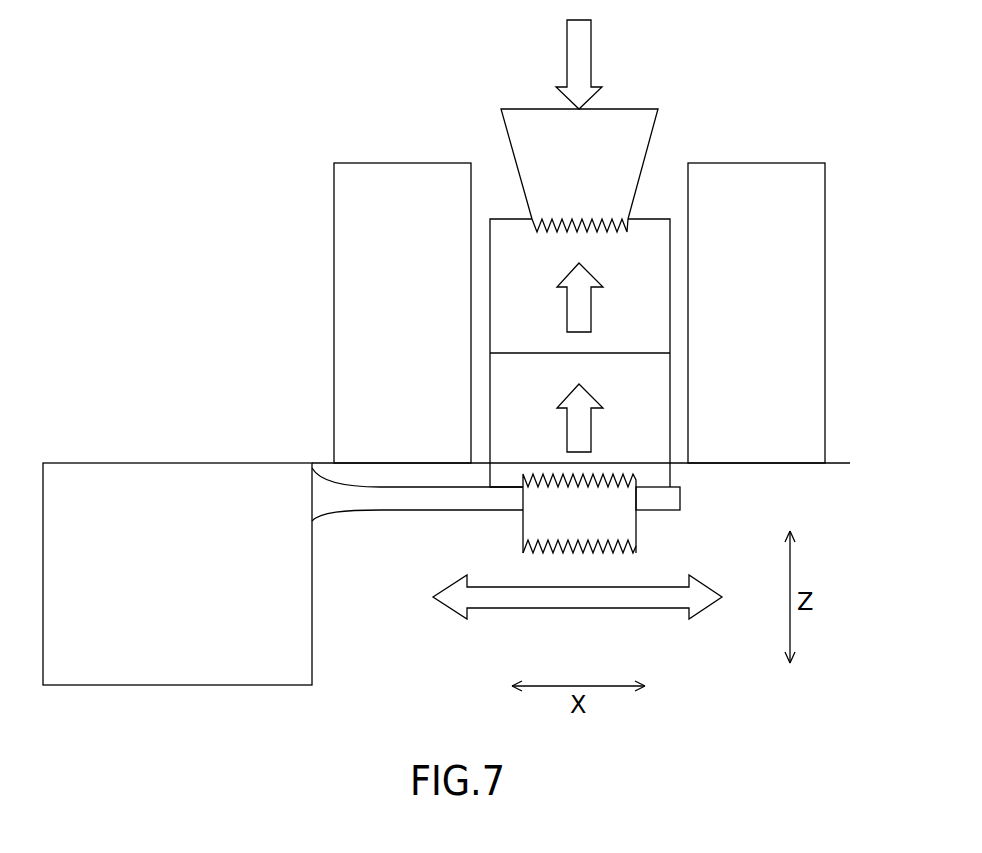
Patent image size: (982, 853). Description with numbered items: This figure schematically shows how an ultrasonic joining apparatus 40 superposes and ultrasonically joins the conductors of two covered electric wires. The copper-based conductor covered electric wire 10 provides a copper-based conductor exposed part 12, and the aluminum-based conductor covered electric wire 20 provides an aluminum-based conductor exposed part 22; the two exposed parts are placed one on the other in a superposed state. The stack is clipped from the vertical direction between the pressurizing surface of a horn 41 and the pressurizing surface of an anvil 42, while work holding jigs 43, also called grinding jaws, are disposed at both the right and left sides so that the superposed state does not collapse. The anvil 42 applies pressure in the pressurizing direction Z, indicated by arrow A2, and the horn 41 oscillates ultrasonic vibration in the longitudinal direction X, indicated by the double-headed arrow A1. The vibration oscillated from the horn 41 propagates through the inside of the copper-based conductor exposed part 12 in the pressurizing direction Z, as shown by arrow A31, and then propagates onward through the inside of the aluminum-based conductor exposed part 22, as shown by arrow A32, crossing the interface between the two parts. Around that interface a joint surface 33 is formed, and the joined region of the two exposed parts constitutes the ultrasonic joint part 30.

The copper-based conductor covered electric wire 10 is at (510, 420).
The copper-based conductor exposed part 12 is at (490, 420).
The aluminum-based conductor covered electric wire 20 is at (510, 286).
The aluminum-based conductor exposed part 22 is at (490, 290).
The ultrasonic joint part 30 is at (728, 278).
The joint surface 33 is at (641, 353).
The ultrasonic joining apparatus 40 is at (101, 420).
The horn 41 is at (179, 463).
The anvil 42 is at (653, 135).
The work holding jigs (grinding jaws) 43 is at (390, 178).
The arrow indicating ultrasonic vibration in longitudinal direction X A1 is at (612, 608).
The arrow indicating pressurizing direction Z A2 is at (591, 50).
The arrow indicating vibration propagation through copper-based conductor exposed pa A31 is at (594, 424).
The arrow indicating vibration propagation through aluminum-based conductor exposed A32 is at (594, 304).